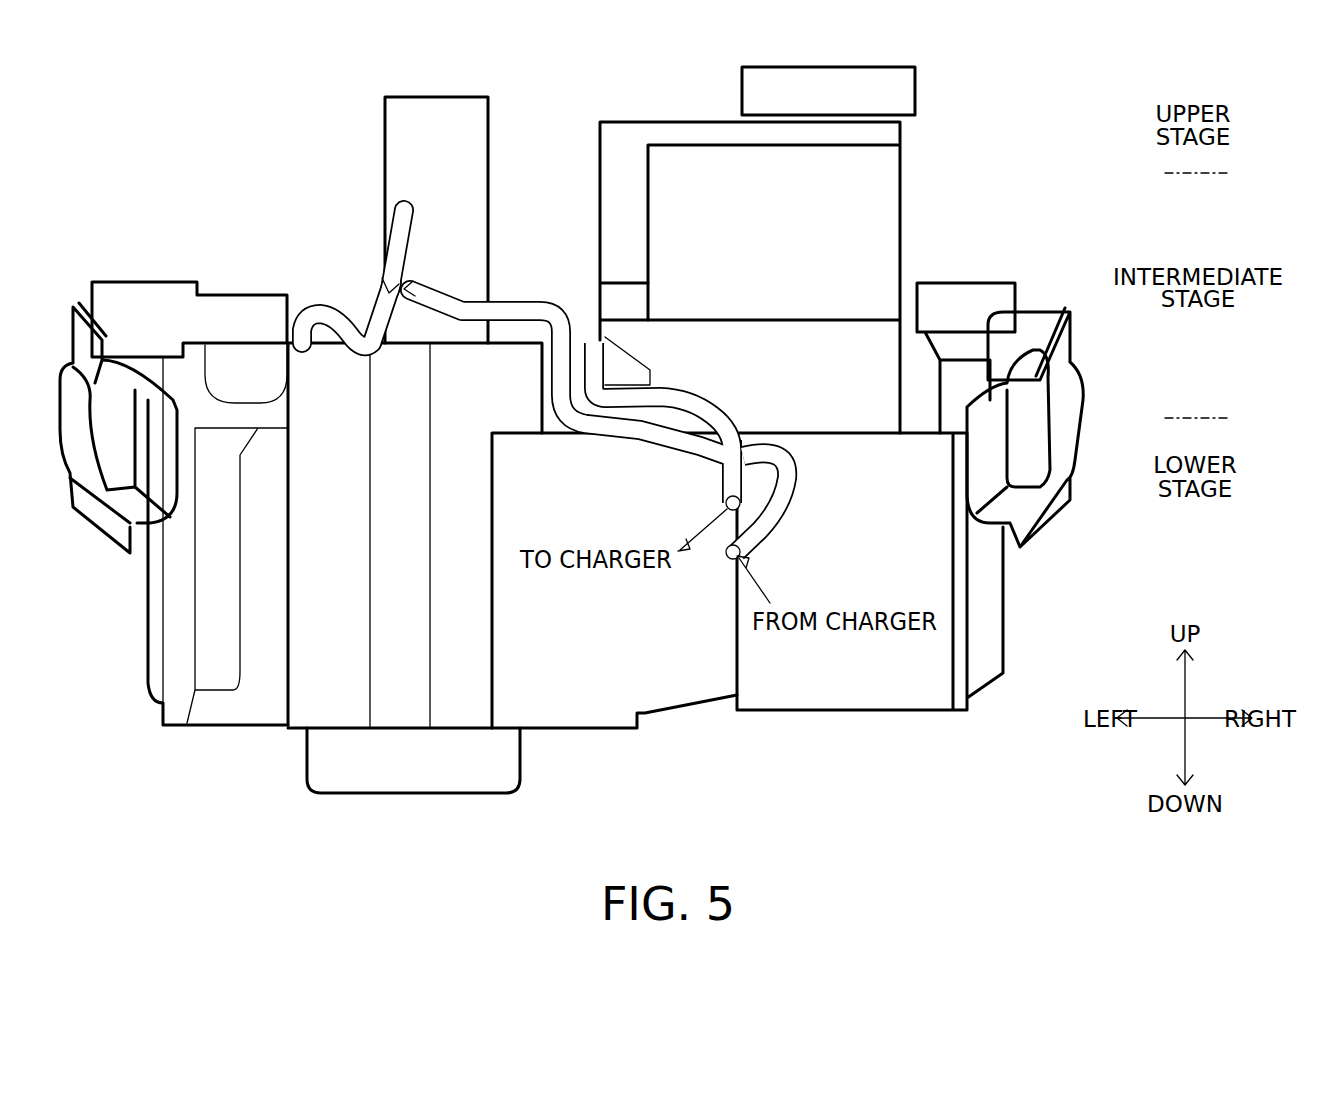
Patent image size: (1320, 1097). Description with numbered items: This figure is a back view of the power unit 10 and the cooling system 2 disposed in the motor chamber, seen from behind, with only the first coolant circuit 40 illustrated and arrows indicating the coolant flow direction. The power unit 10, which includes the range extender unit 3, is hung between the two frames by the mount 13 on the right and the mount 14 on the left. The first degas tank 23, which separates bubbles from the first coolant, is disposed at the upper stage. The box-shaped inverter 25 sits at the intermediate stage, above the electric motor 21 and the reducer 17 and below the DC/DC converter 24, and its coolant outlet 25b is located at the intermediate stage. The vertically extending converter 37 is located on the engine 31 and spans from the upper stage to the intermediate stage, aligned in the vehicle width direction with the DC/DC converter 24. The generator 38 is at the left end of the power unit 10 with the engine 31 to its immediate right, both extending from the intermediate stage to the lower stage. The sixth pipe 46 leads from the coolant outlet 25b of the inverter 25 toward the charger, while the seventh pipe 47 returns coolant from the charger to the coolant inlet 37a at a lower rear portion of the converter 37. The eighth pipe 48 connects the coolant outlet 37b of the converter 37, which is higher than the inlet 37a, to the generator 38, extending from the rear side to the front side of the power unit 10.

The cooling system 2 is at (949, 186).
The range extender unit 3 is at (222, 238).
The power unit 10 is at (972, 737).
The mount 13 is at (998, 283).
The mount 14 is at (140, 280).
The reducer 17 is at (571, 732).
The electric motor 21 is at (837, 712).
The first degas tank 23 is at (786, 65).
The DC/DC converter 24 is at (677, 122).
The inverter 25 is at (848, 337).
The coolant outlet 25b is at (640, 342).
The engine 31 is at (303, 708).
The converter 37 is at (385, 133).
The coolant inlet 37a is at (410, 283).
The coolant outlet 37b is at (405, 198).
The generator 38 is at (206, 733).
The first coolant circuit 40 is at (548, 454).
The sixth pipe 46 is at (672, 405).
The seventh pipe 47 is at (787, 490).
The eighth pipe 48 is at (314, 310).